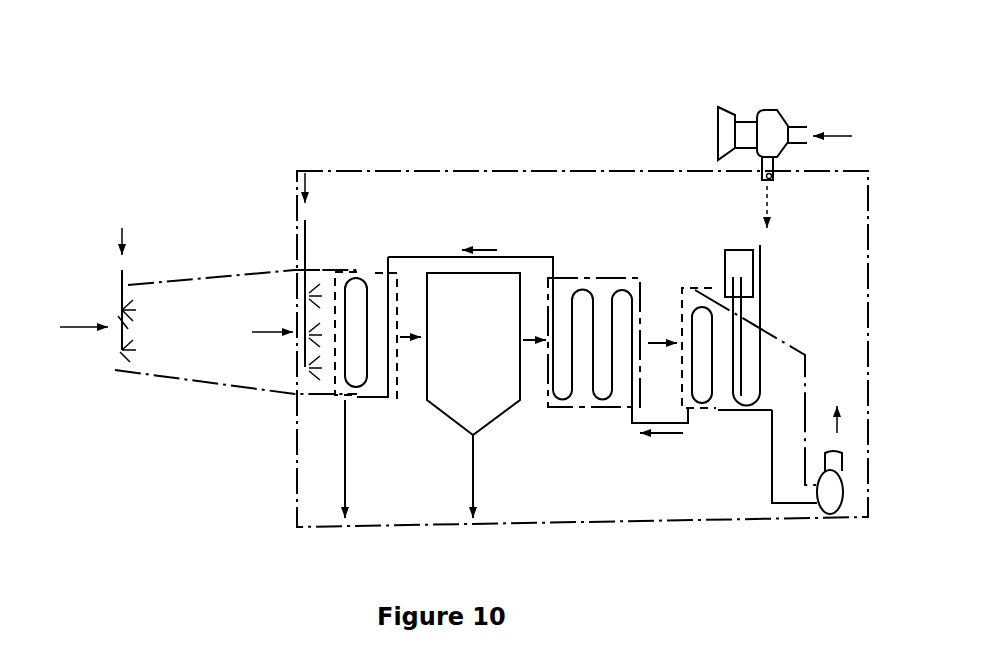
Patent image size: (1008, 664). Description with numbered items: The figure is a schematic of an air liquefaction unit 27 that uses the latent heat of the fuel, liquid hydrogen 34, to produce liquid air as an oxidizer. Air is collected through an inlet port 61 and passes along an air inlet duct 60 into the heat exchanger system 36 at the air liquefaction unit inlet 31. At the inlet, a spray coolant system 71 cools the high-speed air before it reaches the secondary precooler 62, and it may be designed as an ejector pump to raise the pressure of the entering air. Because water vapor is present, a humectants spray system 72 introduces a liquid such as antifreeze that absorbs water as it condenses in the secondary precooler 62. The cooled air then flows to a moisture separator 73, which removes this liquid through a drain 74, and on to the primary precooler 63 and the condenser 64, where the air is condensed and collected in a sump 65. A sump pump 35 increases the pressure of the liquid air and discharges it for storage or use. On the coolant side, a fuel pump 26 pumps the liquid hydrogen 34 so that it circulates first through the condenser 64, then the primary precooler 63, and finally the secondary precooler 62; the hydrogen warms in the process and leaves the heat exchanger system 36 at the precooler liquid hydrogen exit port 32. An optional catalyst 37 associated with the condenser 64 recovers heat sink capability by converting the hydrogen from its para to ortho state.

The air liquefaction unit 27 is at (582, 171).
The fuel pump 26 is at (747, 120).
The liquid hydrogen 34 is at (832, 130).
The catalyst 37 is at (738, 263).
The heat exchanger system 36 is at (706, 299).
The spray coolant system 71 is at (122, 312).
The inlet port 61 is at (110, 333).
The air inlet duct 60 is at (228, 385).
The air liquefaction unit inlet 31 is at (292, 338).
The humectants spray system 72 is at (303, 310).
The secondary precooler 62 is at (373, 362).
The precooler liquid hydrogen exit port 32 is at (342, 492).
The moisture separator 73 is at (467, 373).
The drain 74 is at (469, 493).
The primary precooler 63 is at (585, 388).
The condenser 64 is at (720, 385).
The sump 65 is at (787, 487).
The sump pump 35 is at (822, 520).